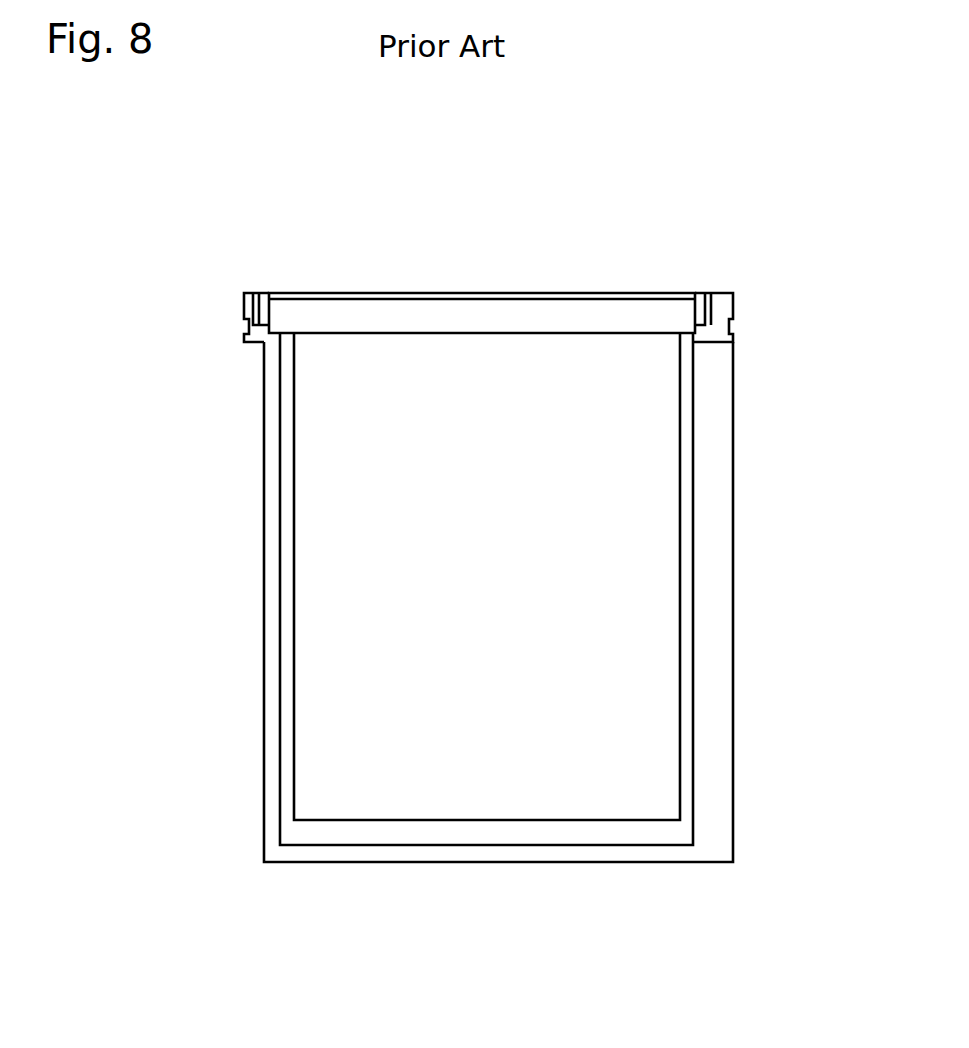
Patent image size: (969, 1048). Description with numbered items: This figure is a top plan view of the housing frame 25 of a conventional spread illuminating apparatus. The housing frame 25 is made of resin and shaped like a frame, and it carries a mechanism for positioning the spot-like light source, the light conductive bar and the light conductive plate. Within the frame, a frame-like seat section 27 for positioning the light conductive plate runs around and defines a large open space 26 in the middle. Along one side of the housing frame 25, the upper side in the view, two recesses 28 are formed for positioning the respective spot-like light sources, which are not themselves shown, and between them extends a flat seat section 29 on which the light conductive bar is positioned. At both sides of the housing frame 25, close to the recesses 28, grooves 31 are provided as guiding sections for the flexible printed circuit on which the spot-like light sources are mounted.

The housing frame 25 is at (492, 280).
The open space 26 is at (362, 615).
The frame-like seat section 27 is at (412, 834).
The recess 28 is at (259, 308).
The flat seat section 29 is at (577, 315).
The groove 31 is at (242, 318).